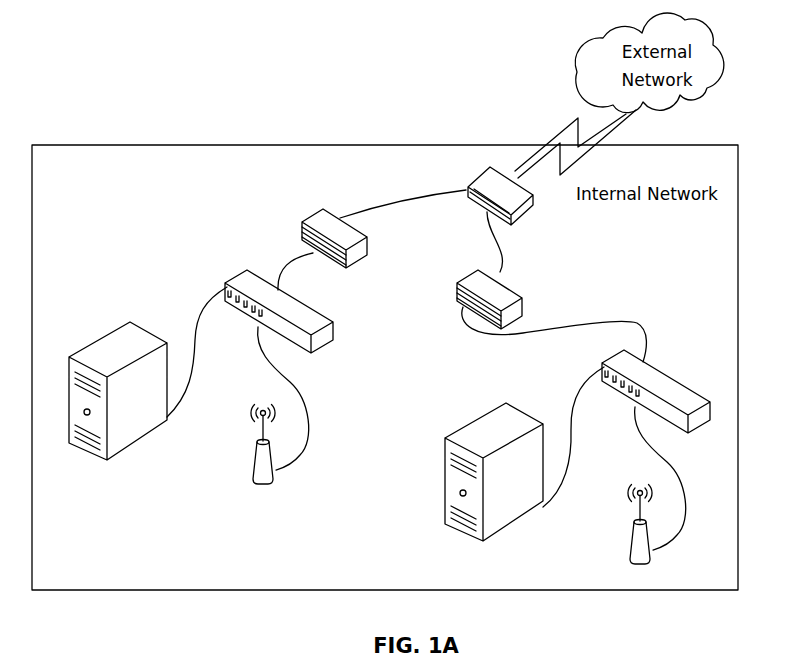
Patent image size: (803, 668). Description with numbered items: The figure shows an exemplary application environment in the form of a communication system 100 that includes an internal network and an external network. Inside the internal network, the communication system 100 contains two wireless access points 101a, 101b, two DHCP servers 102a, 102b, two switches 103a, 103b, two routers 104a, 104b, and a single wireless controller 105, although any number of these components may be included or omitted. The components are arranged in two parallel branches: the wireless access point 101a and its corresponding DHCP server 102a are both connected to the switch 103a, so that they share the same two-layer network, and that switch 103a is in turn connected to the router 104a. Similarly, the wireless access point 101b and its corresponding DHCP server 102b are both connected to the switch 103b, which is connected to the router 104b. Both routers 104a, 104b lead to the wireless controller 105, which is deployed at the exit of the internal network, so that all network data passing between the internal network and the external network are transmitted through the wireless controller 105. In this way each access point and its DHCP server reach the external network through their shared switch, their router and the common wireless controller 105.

The communication system 100 is at (392, 108).
The wireless access point 101a is at (256, 460).
The wireless access point 101b is at (630, 550).
The DHCP server 102a is at (118, 336).
The DHCP server 102b is at (478, 424).
The switch 103a is at (336, 322).
The switch 103b is at (656, 366).
The router 104a is at (304, 218).
The router 104b is at (512, 292).
The wireless controller 105 is at (468, 186).